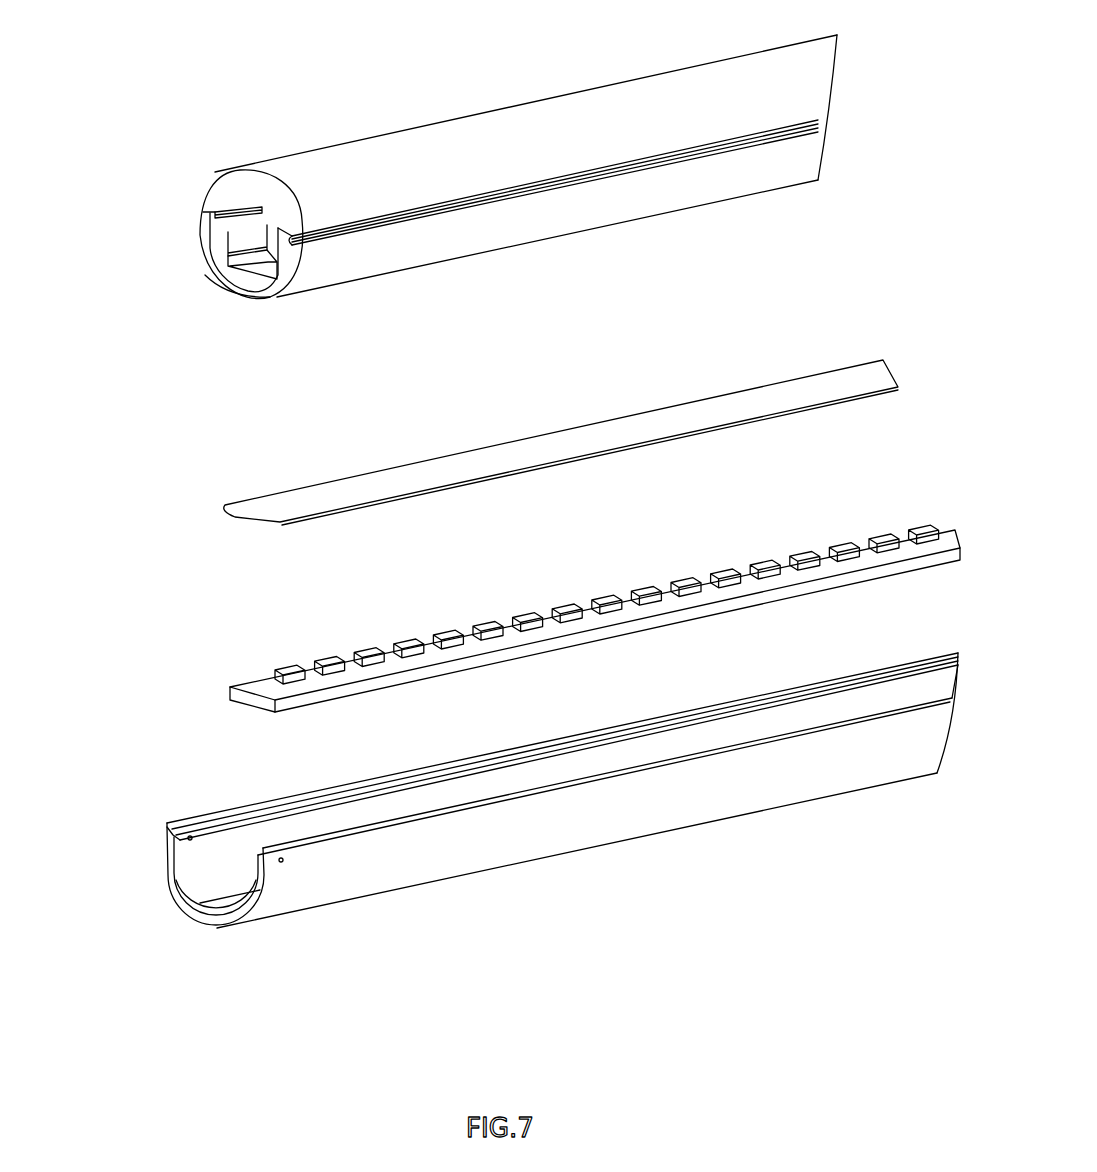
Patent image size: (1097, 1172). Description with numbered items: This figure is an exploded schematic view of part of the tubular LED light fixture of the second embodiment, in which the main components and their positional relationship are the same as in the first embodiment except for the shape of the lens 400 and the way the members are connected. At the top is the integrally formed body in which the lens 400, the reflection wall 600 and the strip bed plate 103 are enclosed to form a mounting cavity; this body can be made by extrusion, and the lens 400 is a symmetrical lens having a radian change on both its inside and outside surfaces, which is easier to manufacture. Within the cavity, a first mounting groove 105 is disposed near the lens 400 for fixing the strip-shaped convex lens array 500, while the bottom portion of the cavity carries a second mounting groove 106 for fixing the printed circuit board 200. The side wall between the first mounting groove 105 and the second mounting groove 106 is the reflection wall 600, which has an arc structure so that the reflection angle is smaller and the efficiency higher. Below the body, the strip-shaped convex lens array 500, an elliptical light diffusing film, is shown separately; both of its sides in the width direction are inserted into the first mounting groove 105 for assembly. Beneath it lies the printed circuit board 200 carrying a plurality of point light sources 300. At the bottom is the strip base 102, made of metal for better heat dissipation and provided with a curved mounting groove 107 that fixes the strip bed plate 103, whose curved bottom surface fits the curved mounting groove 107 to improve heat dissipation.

The lens 400 is at (240, 187).
The first mounting groove 105 is at (215, 218).
The reflection wall 600 is at (240, 238).
The second mounting groove 106 is at (233, 260).
The strip bed plate 103 is at (247, 283).
The strip-shaped convex lens array 500 is at (277, 507).
The point light sources 300 is at (290, 670).
The printed circuit board 200 is at (257, 693).
The curved mounting groove 107 is at (203, 878).
The strip base 102 is at (220, 921).